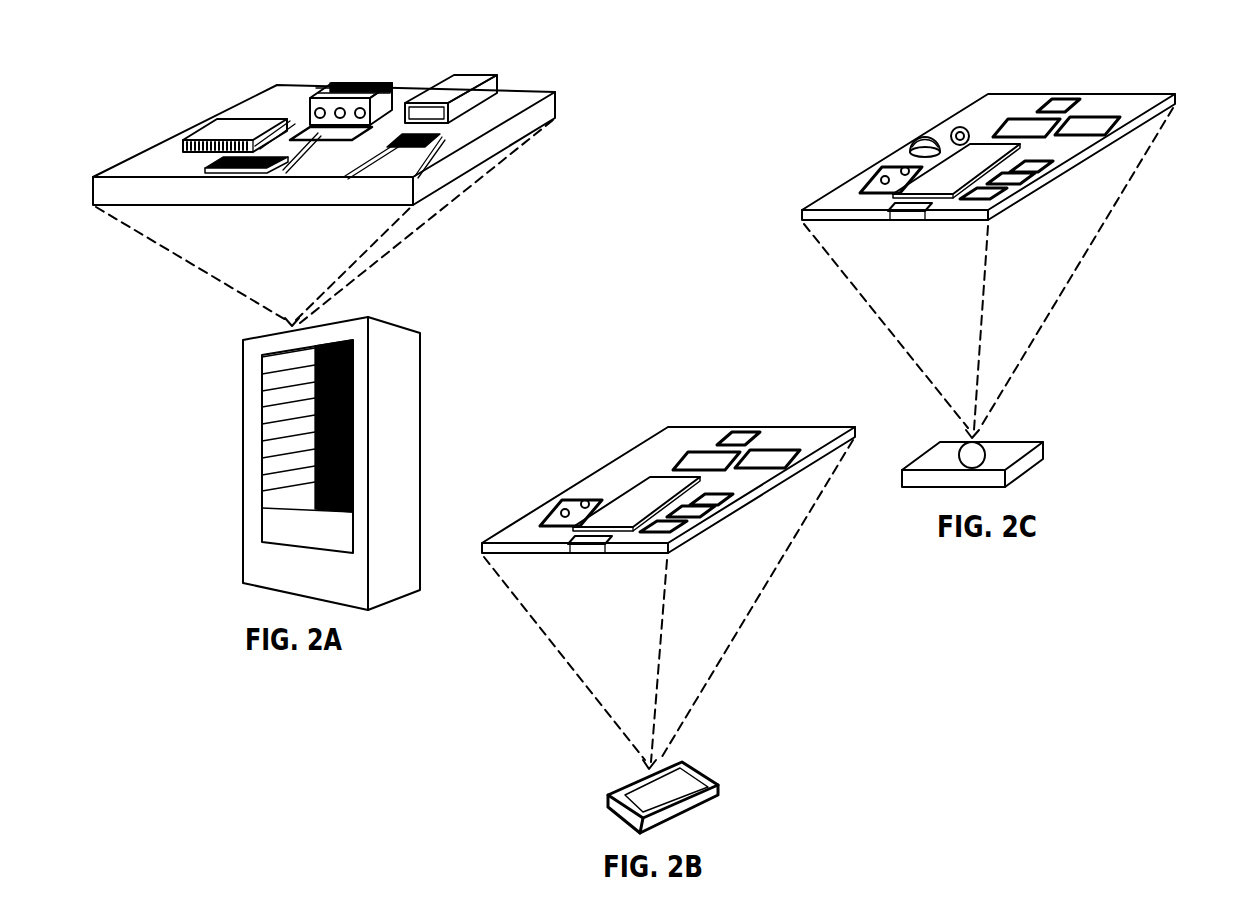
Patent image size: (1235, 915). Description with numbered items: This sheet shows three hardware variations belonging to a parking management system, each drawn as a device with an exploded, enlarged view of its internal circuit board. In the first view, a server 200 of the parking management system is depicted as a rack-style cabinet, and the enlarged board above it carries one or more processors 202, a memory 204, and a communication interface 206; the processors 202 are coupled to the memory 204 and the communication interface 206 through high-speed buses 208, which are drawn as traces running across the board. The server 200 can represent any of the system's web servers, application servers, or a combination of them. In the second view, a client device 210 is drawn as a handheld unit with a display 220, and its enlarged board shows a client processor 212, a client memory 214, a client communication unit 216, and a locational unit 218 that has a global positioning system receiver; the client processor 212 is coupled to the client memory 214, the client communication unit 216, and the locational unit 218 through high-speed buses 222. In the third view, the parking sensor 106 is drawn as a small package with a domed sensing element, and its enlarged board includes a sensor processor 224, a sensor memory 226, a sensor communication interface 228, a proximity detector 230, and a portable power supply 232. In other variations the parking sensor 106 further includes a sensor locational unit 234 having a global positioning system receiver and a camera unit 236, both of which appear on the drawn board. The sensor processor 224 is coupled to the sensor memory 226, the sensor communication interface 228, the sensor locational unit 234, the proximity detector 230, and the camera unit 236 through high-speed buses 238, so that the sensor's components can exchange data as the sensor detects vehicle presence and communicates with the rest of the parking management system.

In FIG. 2A, the server 200 is at (242, 447).
In FIG. 2A, the processors 202 is at (207, 130).
In FIG. 2A, the memory 204 is at (343, 92).
In FIG. 2A, the communication interface 206 is at (425, 136).
In FIG. 2A, the high-speed buses 208 is at (378, 131).
In FIG. 2B, the client device 210 is at (703, 771).
In FIG. 2B, the client processor 212 is at (712, 456).
In FIG. 2B, the client memory 214 is at (562, 512).
In FIG. 2B, the client communication unit 216 is at (722, 517).
In FIG. 2B, the locational unit 218 is at (762, 449).
In FIG. 2B, the display 220 is at (668, 795).
In FIG. 2B, the high-speed buses 222 is at (705, 453).
In FIG. 2C, the sensor processor 224 is at (996, 106).
In FIG. 2C, the sensor memory 226 is at (852, 166).
In FIG. 2C, the sensor communication interface 228 is at (1088, 187).
In FIG. 2C, the proximity detector 230 is at (881, 133).
In FIG. 2C, the portable power supply 232 is at (1091, 160).
In FIG. 2C, the sensor locational unit 234 is at (1099, 92).
In FIG. 2C, the camera unit 236 is at (878, 111).
In FIG. 2C, the high-speed buses 238 is at (918, 109).
In FIG. 2C, the parking sensor 106 is at (1042, 452).